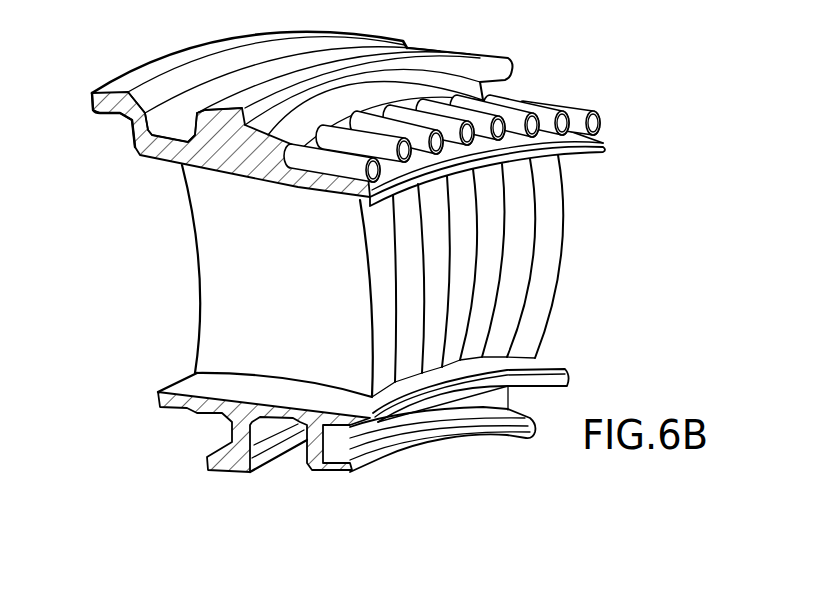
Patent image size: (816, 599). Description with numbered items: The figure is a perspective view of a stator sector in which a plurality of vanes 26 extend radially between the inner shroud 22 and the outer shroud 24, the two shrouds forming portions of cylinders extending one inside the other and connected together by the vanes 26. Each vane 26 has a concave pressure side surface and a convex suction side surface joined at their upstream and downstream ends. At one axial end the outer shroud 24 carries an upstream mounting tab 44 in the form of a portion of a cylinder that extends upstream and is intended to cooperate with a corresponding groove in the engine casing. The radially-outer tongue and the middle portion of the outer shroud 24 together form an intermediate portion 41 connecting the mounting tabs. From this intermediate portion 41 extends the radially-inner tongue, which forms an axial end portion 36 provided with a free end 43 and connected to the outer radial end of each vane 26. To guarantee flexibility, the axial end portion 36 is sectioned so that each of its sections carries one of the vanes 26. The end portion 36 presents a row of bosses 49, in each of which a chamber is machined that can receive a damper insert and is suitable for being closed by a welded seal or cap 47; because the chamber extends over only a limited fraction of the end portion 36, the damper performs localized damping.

The inner shroud 22 is at (148, 400).
The outer shroud 24 is at (110, 72).
The vanes 26 is at (210, 283).
The axial end portion 36 is at (260, 156).
The intermediate portion 41 is at (173, 130).
The free end 43 is at (606, 148).
The upstream mounting tab 44 is at (96, 100).
The welded seal or cap 47 is at (500, 133).
The boss 49 is at (358, 140).